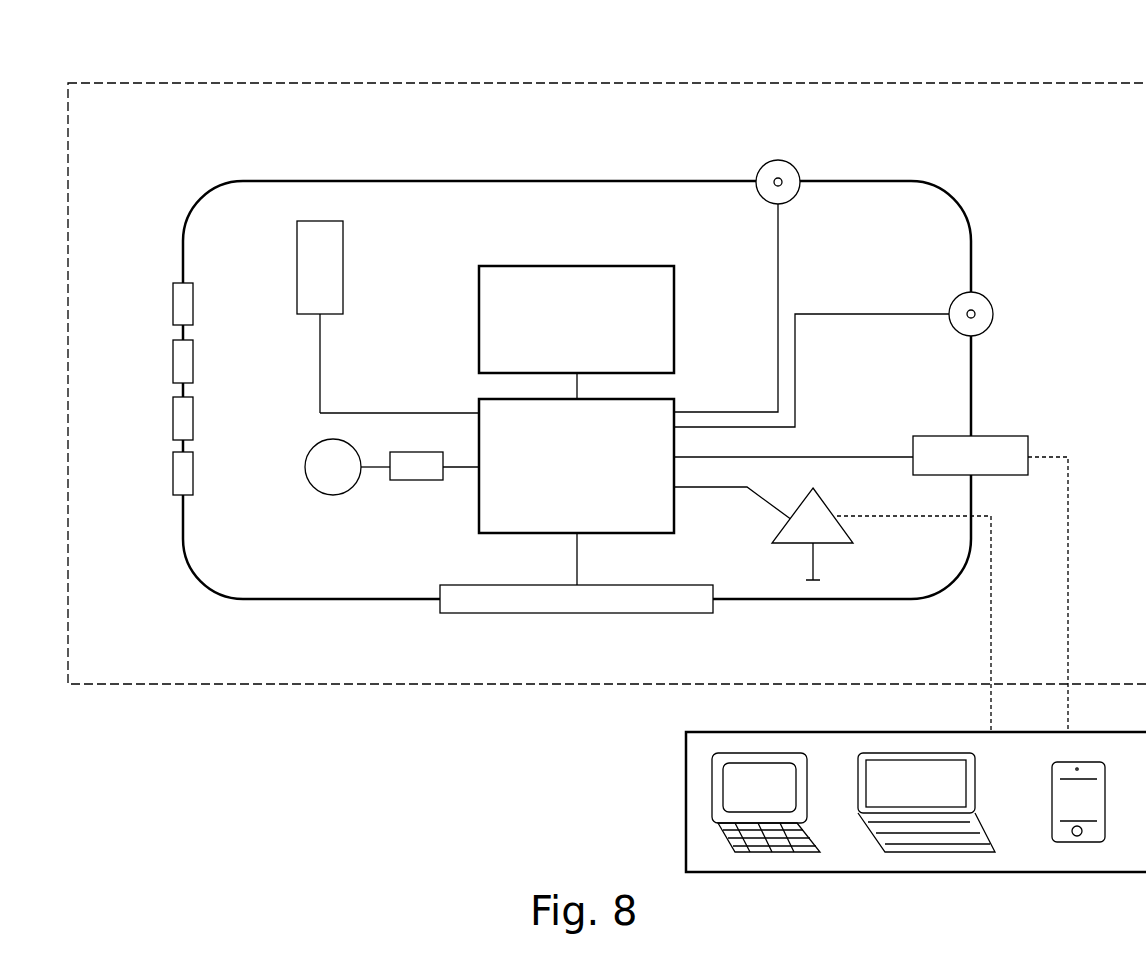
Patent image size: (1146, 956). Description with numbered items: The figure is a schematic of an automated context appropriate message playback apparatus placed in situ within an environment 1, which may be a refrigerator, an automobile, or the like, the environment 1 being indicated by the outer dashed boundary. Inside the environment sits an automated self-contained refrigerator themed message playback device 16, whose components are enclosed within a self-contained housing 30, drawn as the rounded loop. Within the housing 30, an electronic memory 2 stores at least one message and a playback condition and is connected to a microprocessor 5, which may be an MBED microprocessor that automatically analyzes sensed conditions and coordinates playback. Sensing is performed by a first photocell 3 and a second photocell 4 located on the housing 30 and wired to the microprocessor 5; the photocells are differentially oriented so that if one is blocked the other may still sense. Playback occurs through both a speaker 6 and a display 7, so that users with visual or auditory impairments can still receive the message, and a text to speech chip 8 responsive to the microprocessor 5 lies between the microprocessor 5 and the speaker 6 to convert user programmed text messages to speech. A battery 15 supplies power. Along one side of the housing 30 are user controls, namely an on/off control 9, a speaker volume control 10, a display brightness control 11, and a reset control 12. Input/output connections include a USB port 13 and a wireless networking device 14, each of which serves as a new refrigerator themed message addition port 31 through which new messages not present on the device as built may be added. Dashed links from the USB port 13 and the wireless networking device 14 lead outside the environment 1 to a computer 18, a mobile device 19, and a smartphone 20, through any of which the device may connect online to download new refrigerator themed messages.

The environment 1 is at (795, 83).
The electronic memory 2 is at (528, 266).
The first photocell 3 is at (793, 165).
The second photocell 4 is at (993, 310).
The microprocessor 5 is at (520, 535).
The speaker 6 is at (307, 478).
The display 7 is at (515, 615).
The text to speech chip 8 is at (417, 481).
The on/off control 9 is at (173, 304).
The speaker volume control 10 is at (173, 362).
The display brightness control 11 is at (173, 418).
The reset control 12 is at (173, 474).
The USB port 13 is at (998, 430).
The wireless networking device 14 is at (843, 548).
The battery 15 is at (343, 268).
The automated self-contained refrigerator themed message playback device 16 is at (175, 560).
The computer 18 is at (760, 852).
The mobile device 19 is at (935, 855).
The smartphone 20 is at (1068, 845).
The self-contained housing 30 is at (308, 178).
The new refrigerator themed message addition port 31 is at (1030, 443).